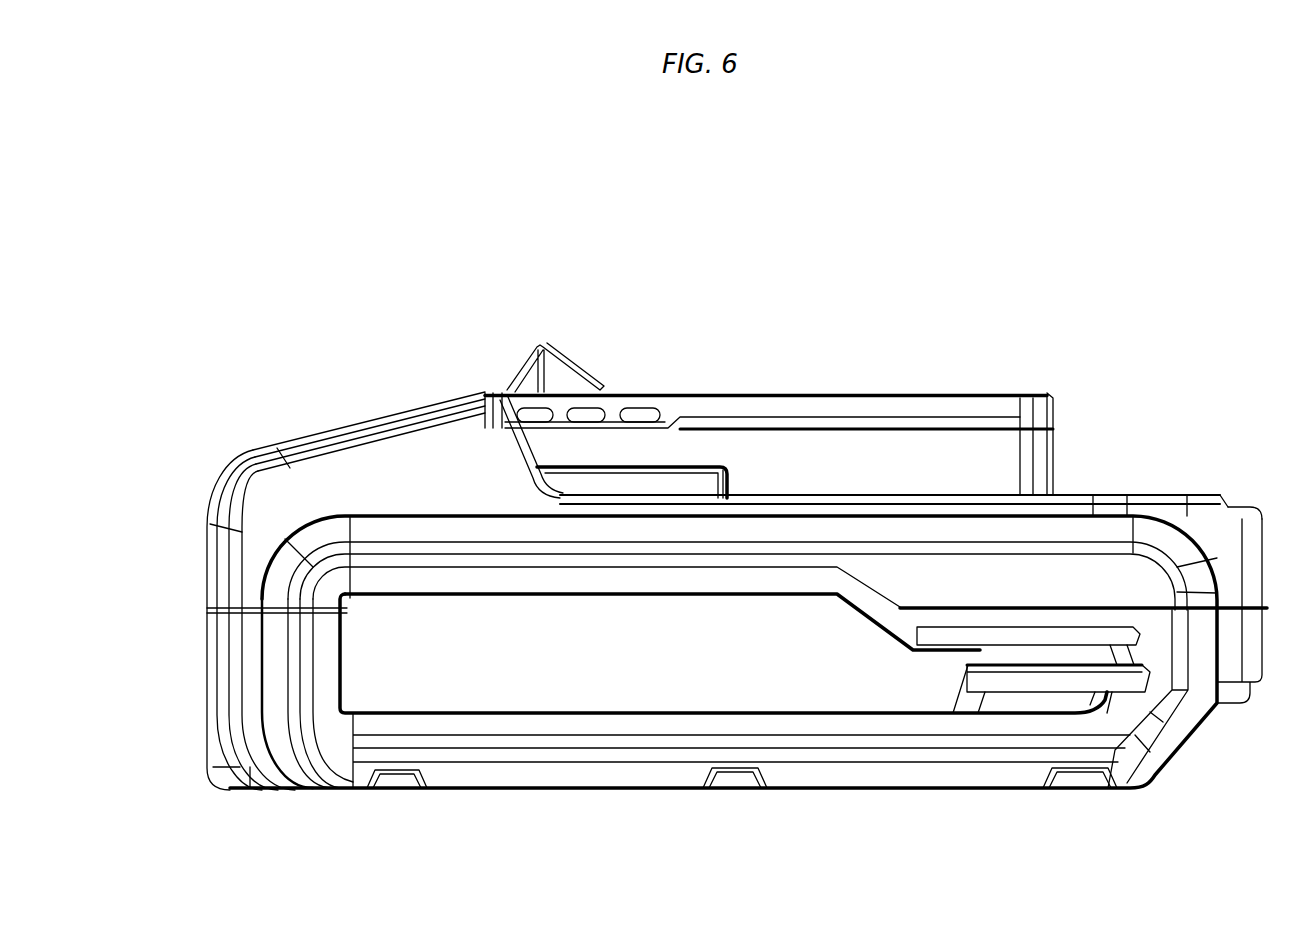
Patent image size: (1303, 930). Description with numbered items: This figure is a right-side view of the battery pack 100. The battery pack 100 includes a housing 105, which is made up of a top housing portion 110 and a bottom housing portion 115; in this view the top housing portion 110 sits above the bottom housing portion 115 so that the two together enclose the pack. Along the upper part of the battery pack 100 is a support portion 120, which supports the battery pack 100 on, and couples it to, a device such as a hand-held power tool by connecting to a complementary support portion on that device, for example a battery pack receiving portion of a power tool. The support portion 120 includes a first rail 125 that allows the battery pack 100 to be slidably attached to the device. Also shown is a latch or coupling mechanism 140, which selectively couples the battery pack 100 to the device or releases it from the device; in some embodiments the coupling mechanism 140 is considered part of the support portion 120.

The battery pack 100 is at (1192, 178).
The housing 105 is at (1128, 292).
The top housing portion 110 is at (255, 456).
The bottom housing portion 115 is at (218, 722).
The support portion 120 is at (1080, 432).
The first rail 125 is at (865, 392).
The coupling mechanism 140 is at (512, 347).